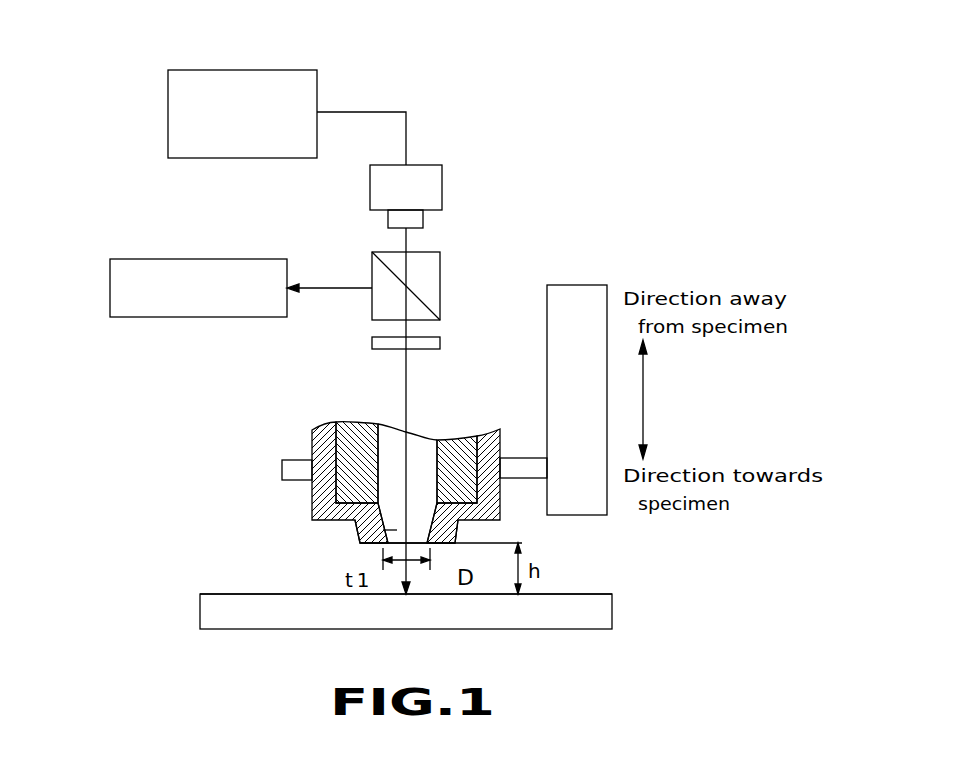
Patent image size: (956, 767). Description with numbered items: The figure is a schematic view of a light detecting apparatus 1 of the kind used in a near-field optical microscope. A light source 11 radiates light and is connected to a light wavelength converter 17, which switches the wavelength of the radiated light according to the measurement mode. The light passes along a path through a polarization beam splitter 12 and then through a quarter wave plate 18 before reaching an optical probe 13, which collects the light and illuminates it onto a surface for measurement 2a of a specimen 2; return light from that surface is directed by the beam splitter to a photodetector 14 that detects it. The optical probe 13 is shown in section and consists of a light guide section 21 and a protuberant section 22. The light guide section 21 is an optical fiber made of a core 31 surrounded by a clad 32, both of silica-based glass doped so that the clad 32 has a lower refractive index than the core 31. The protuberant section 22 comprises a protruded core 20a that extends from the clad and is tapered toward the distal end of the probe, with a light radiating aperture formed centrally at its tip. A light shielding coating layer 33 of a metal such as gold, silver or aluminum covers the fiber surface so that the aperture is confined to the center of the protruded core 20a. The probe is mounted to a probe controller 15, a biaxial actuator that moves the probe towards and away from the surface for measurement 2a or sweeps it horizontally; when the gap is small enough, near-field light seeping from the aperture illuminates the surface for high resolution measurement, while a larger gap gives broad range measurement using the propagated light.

The light detecting apparatus 1 is at (555, 158).
The specimen 2 is at (585, 613).
The surface for measurement 2a is at (563, 593).
The light source 11 is at (442, 183).
The polarization beam splitter 12 is at (440, 281).
The optical probe 13 is at (359, 473).
The photodetector 14 is at (198, 259).
The probe controller 15 is at (575, 285).
The light wavelength converter 17 is at (242, 70).
The quarter wave plate 18 is at (372, 343).
The protruded core 20a is at (360, 545).
The light guide section 21 is at (273, 458).
The protuberant section 22 is at (277, 520).
The core 31 is at (417, 443).
The clad 32 is at (358, 432).
The light shielding coating layer 33 is at (317, 430).